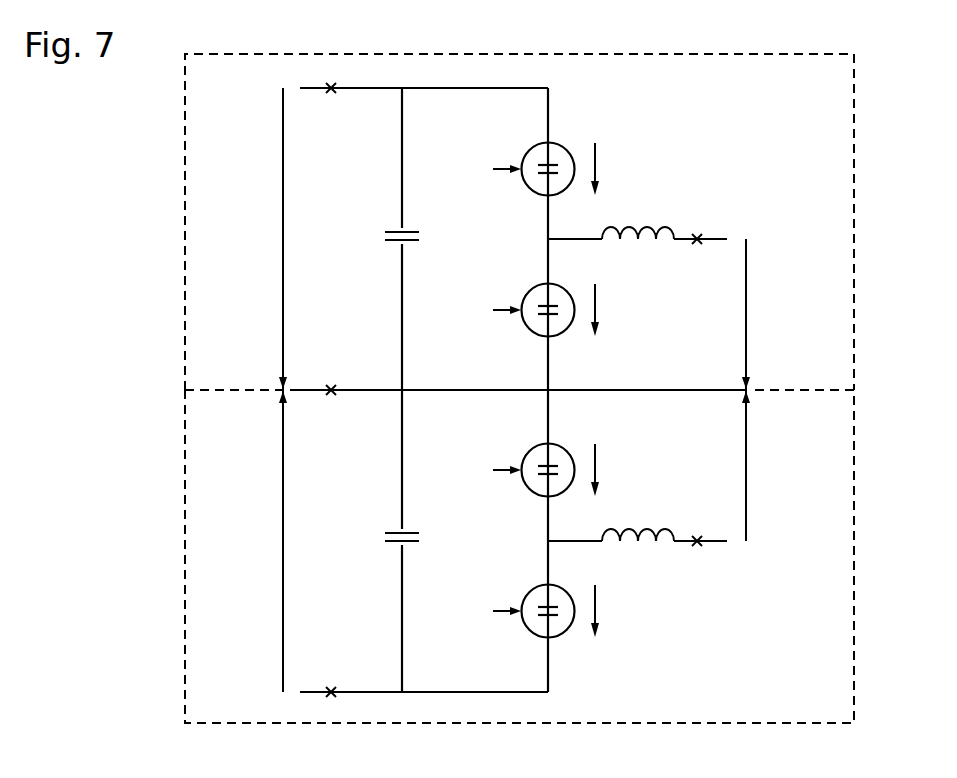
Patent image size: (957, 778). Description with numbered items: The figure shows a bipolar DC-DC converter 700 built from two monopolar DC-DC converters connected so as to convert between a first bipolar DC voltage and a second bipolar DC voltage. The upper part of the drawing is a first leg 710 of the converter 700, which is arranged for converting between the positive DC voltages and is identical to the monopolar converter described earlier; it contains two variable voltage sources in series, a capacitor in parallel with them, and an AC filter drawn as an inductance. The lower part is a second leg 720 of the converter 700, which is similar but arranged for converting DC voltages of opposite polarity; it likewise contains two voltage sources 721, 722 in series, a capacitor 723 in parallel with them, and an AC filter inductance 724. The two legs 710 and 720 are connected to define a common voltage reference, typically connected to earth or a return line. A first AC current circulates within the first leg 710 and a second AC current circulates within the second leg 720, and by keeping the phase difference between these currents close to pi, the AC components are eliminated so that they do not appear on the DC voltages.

The converter 700 is at (510, 416).
The first leg 710 is at (551, 222).
The second leg 720 is at (551, 556).
The voltage source 721 is at (534, 460).
The voltage source 722 is at (534, 601).
The capacitor 723 is at (380, 519).
The inductor 724 is at (637, 556).